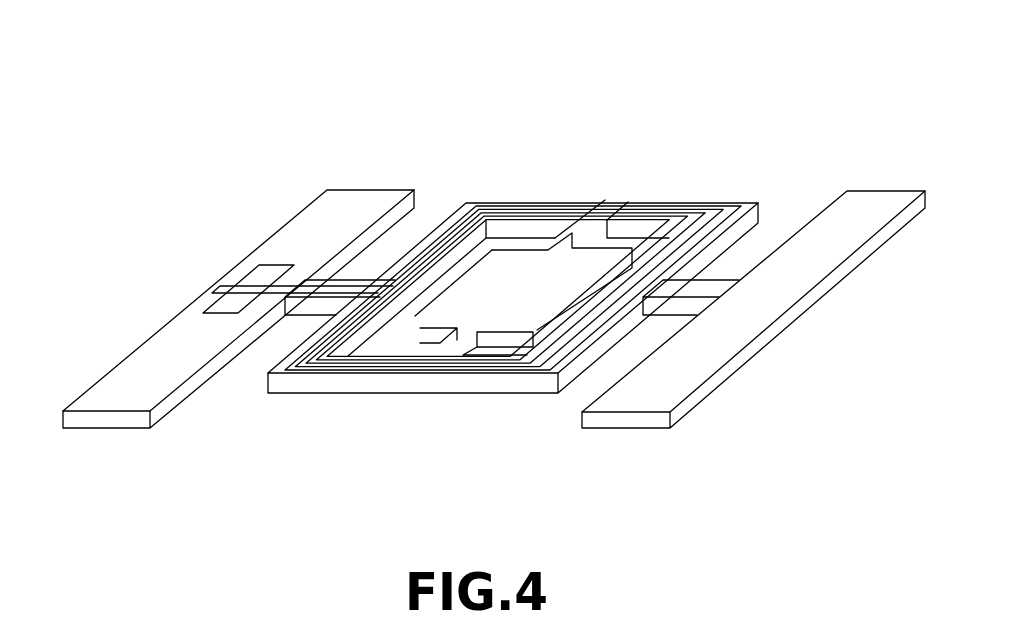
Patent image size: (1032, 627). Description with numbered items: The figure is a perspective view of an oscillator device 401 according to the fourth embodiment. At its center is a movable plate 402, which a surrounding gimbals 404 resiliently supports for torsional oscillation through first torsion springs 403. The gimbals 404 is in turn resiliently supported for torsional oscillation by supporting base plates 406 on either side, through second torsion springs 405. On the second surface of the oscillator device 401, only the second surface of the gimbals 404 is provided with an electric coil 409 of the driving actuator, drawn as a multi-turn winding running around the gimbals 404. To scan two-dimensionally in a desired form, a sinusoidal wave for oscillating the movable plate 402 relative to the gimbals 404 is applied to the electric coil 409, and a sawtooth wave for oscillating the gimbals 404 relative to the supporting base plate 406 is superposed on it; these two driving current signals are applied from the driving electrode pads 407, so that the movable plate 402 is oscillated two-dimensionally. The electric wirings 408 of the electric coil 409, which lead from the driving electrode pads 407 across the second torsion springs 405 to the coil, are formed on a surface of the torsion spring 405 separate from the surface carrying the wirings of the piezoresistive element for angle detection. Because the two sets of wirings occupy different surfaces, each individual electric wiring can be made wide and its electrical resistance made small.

The oscillator device 401 is at (452, 180).
The movable plate 402 is at (510, 302).
The first torsion springs 403 is at (585, 228).
The gimbals 404 is at (362, 385).
The second torsion springs 405 is at (303, 303).
The supporting base plates 406 is at (120, 398).
The driving electrode pads 407 is at (228, 297).
The electric wirings 408 is at (300, 282).
The electric coil 409 is at (657, 204).